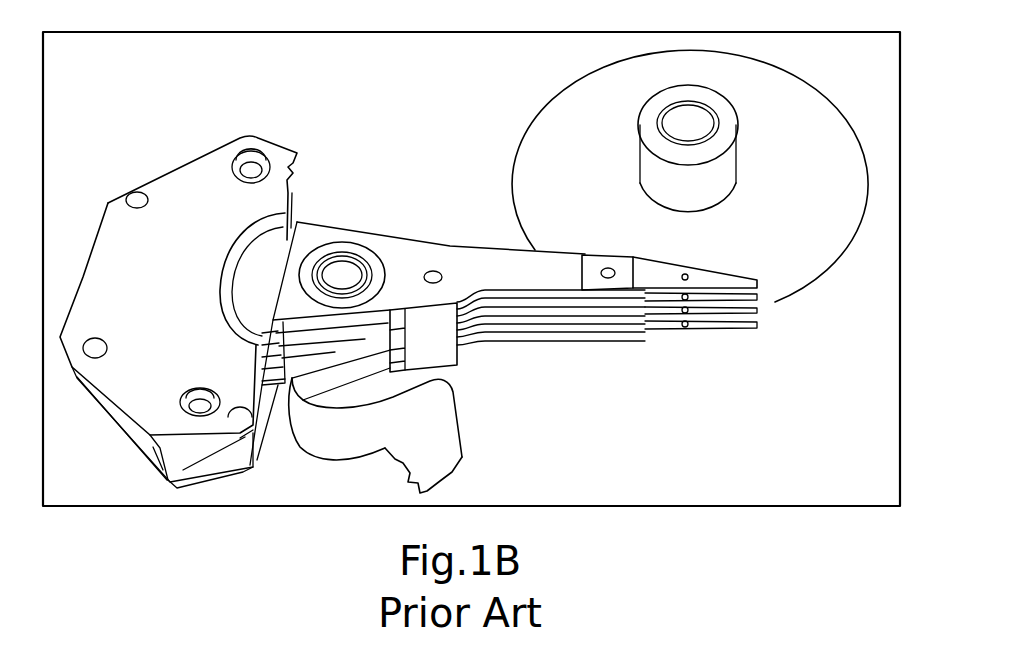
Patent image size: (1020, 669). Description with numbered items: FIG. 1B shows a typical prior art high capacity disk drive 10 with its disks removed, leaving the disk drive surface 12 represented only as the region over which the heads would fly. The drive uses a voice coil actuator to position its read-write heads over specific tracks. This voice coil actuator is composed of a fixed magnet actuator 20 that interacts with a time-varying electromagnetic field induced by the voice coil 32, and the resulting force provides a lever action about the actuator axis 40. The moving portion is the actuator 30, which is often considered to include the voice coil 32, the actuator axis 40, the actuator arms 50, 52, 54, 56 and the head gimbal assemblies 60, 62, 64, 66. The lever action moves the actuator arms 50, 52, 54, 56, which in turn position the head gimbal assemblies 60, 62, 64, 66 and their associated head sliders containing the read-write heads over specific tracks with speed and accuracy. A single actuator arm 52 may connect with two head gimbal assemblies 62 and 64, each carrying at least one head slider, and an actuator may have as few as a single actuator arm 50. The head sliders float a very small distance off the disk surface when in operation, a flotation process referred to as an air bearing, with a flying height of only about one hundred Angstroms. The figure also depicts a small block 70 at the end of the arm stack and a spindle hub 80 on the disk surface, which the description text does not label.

The high capacity disk drive 10 is at (350, 86).
The disk drive surface 12 is at (782, 78).
The fixed magnet actuator 20 is at (188, 185).
The actuator 30 is at (267, 267).
The voice coil 32 is at (250, 287).
The actuator axis 40 is at (345, 267).
The actuator arm 50 is at (523, 260).
The actuator arm 52 is at (580, 320).
The actuator arm 54 is at (555, 333).
The actuator arm 56 is at (530, 345).
The head gimbal assembly 60 is at (730, 277).
The head gimbal assembly 62 is at (758, 293).
The head gimbal assembly 64 is at (758, 311).
The head gimbal assembly 66 is at (713, 323).
The arm tip mounting block 70 is at (622, 257).
The spindle hub 80 is at (730, 163).